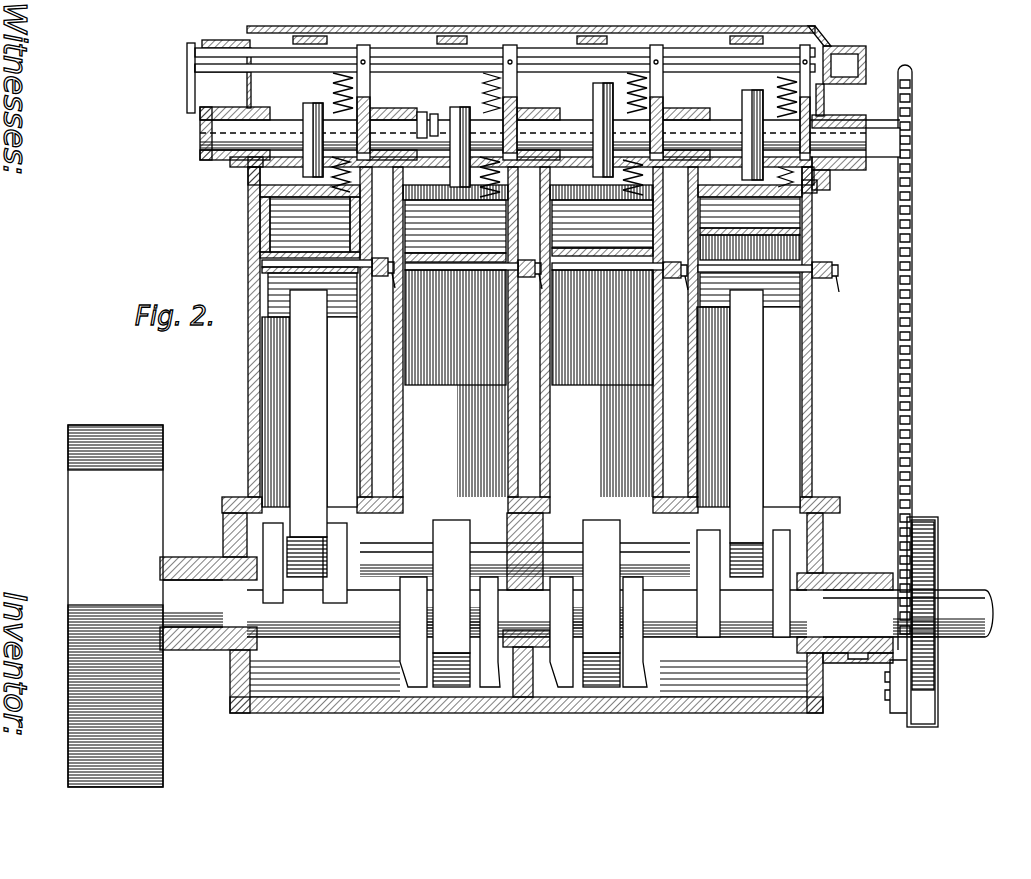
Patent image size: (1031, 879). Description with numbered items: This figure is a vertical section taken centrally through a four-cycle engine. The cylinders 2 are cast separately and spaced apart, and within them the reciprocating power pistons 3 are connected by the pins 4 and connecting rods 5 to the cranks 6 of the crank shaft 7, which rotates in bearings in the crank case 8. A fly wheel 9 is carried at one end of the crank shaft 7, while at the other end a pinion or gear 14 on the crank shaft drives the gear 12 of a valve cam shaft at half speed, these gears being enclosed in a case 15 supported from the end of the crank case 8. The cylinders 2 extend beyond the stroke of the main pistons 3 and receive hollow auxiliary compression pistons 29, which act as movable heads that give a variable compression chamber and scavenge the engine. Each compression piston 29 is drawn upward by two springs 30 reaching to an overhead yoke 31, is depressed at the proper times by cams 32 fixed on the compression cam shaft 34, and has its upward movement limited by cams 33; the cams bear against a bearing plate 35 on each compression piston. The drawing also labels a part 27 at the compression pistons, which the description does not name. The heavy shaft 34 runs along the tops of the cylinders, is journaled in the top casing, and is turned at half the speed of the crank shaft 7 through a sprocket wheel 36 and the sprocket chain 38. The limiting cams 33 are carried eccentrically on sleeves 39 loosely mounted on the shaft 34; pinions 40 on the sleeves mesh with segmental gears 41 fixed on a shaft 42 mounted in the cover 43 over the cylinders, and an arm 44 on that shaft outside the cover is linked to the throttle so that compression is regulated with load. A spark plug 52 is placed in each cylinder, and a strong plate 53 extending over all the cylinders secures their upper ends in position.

The cylinders 2 is at (531, 388).
The power pistons 3 is at (380, 393).
The pins 4 is at (247, 322).
The connecting rods 5 is at (310, 488).
The cranks 6 is at (325, 608).
The crank shaft 7 is at (380, 614).
The crank case 8 is at (340, 712).
The fly wheel 9 is at (68, 592).
The gear 12 is at (940, 540).
The pinion 14 is at (936, 598).
The case 15 is at (940, 710).
The valve rod 27 is at (262, 264).
The compression pistons 29 is at (530, 229).
The springs 30 is at (333, 90).
The yoke 31 is at (345, 48).
The cams 32 is at (590, 36).
The cams 33 is at (315, 130).
The compression cam shaft 34 is at (545, 120).
The bearing plate 35 is at (252, 207).
The sprocket wheel 36 is at (892, 160).
The sprocket chain 38 is at (912, 375).
The sleeves 39 is at (448, 109).
The pinions 40 is at (530, 118).
The segmental gears 41 is at (368, 80).
The shaft 42 is at (423, 112).
The cover 43 is at (450, 36).
The arm 44 is at (187, 90).
The spark plug 52 is at (384, 290).
The plate 53 is at (245, 168).